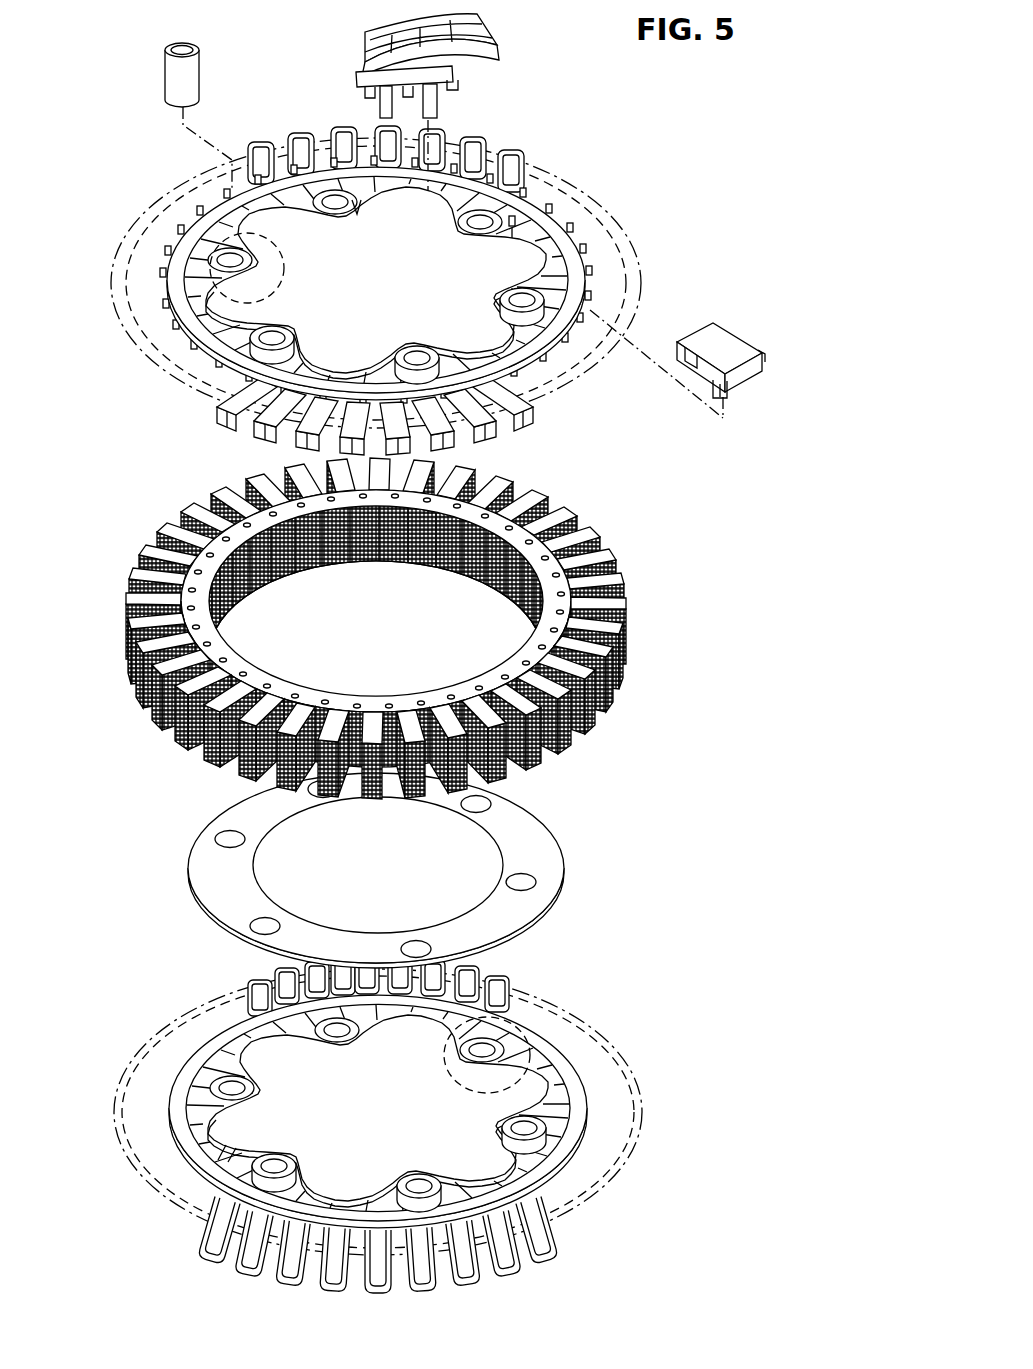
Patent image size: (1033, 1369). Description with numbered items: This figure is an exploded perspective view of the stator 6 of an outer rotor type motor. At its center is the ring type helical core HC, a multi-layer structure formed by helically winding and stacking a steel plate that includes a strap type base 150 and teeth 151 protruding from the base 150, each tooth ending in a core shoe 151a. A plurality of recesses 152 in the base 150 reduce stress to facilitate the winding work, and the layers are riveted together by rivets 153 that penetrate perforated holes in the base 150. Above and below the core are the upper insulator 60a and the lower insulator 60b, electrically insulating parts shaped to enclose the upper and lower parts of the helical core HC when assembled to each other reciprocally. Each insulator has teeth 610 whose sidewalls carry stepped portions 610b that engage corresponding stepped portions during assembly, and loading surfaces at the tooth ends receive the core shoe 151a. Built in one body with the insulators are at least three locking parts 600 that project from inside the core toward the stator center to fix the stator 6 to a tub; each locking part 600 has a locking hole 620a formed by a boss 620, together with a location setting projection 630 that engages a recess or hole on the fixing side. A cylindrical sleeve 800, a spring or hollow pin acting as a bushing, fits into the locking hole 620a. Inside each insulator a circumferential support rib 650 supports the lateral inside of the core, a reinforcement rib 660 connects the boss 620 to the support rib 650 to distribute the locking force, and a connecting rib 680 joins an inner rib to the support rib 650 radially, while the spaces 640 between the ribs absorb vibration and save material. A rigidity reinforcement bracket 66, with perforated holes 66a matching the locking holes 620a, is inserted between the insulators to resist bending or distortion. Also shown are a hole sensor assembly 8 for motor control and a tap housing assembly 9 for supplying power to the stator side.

The stator 6 is at (86, 101).
The hole sensor assembly 8 is at (500, 46).
The tap housing assembly 9 is at (731, 344).
The cylindrical sleeve 800 is at (203, 74).
The upper insulator 60a is at (412, 285).
The lower insulator 60b is at (408, 1119).
The locking part 600 is at (292, 290).
The teeth 610 is at (383, 1244).
The stepped portion 610b is at (492, 1228).
The boss 620 is at (290, 1155).
The locking hole 620a is at (358, 214).
The location setting projection 630 is at (513, 216).
The space 640 is at (265, 992).
The support rib 650 is at (592, 1060).
The reinforcement rib 660 is at (240, 1158).
The connecting rib 680 is at (325, 1200).
The helical core HC is at (418, 628).
The base 150 is at (438, 700).
The teeth 151 is at (186, 523).
The core shoe 151a is at (583, 530).
The recess 152 is at (265, 582).
The rivet 153 is at (330, 700).
The rigidity reinforcement bracket 66 is at (417, 870).
The perforated hole 66a is at (522, 884).